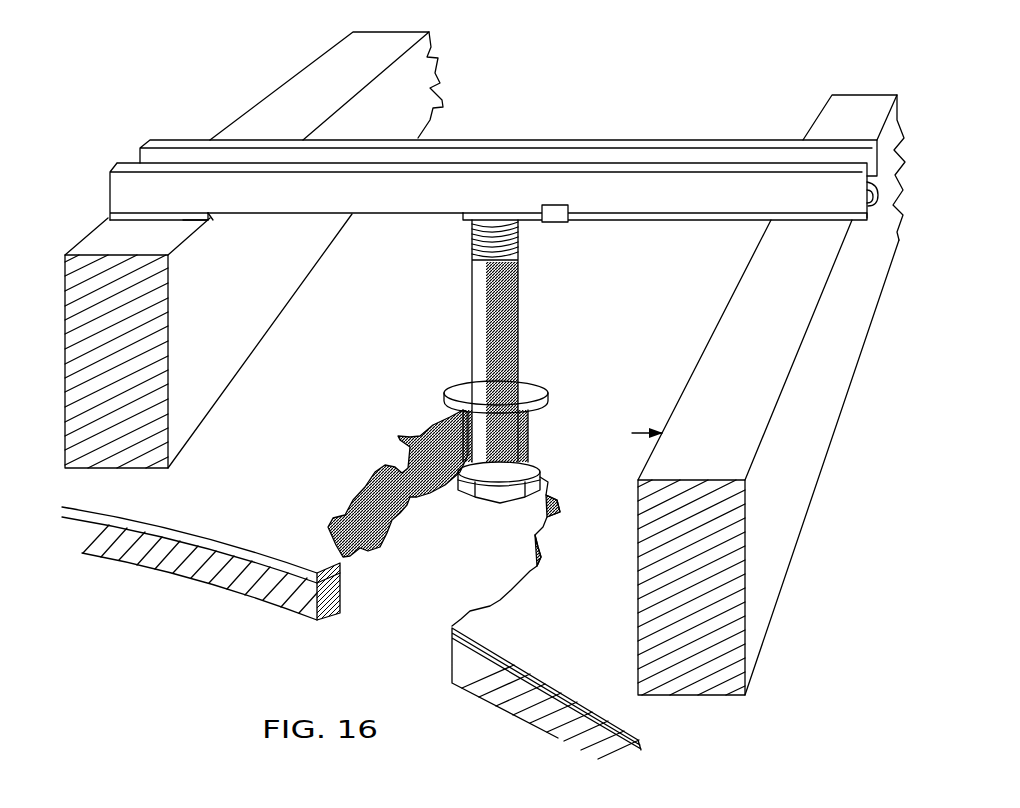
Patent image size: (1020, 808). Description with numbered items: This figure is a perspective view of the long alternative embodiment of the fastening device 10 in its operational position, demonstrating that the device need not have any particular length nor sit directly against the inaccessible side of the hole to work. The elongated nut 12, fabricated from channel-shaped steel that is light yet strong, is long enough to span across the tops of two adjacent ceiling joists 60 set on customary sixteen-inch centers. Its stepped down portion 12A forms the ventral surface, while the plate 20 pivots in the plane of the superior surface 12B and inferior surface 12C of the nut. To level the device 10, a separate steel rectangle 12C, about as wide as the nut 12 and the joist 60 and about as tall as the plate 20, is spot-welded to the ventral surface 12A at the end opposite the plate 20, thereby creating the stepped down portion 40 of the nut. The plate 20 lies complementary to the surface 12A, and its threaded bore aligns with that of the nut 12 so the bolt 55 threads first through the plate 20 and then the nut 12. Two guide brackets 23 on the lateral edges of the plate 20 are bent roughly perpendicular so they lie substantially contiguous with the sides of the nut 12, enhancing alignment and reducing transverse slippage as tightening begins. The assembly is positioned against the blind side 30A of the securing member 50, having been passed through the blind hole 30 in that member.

The fastening device 10 is at (185, 162).
The elongated nut 12 is at (467, 180).
The stepped down portion 12A is at (260, 218).
The superior surface 12B is at (593, 163).
The steel rectangle 12C is at (133, 215).
The plate 20 is at (713, 220).
The guide brackets 23 is at (552, 222).
The blind hole 30 is at (378, 468).
The blind side 30A is at (547, 382).
The stepped bi-level surface 40 is at (183, 220).
The securing member 50 is at (205, 588).
The bolt 55 is at (472, 357).
The ceiling joists 60 is at (180, 407).